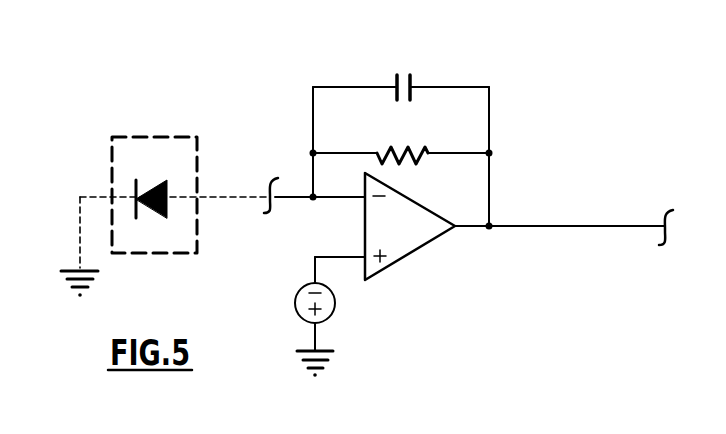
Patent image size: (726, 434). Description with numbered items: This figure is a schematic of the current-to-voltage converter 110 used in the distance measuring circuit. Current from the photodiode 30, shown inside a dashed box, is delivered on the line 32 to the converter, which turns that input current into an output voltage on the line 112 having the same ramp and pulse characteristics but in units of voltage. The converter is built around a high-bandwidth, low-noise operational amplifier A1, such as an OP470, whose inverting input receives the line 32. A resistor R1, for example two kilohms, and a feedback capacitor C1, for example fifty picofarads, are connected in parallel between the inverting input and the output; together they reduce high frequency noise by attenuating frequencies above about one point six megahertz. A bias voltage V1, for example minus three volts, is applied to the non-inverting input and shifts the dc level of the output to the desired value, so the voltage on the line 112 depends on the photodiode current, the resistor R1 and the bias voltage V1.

The photodiode 30 is at (106, 162).
The line 32 is at (213, 194).
The current-to-voltage (I/V) converter 110 is at (461, 207).
The line 112 is at (547, 225).
The feedback capacitor C1 is at (401, 68).
The resistor R1 is at (401, 139).
The operational amplifier A1 is at (402, 246).
The bias voltage V1 is at (312, 317).